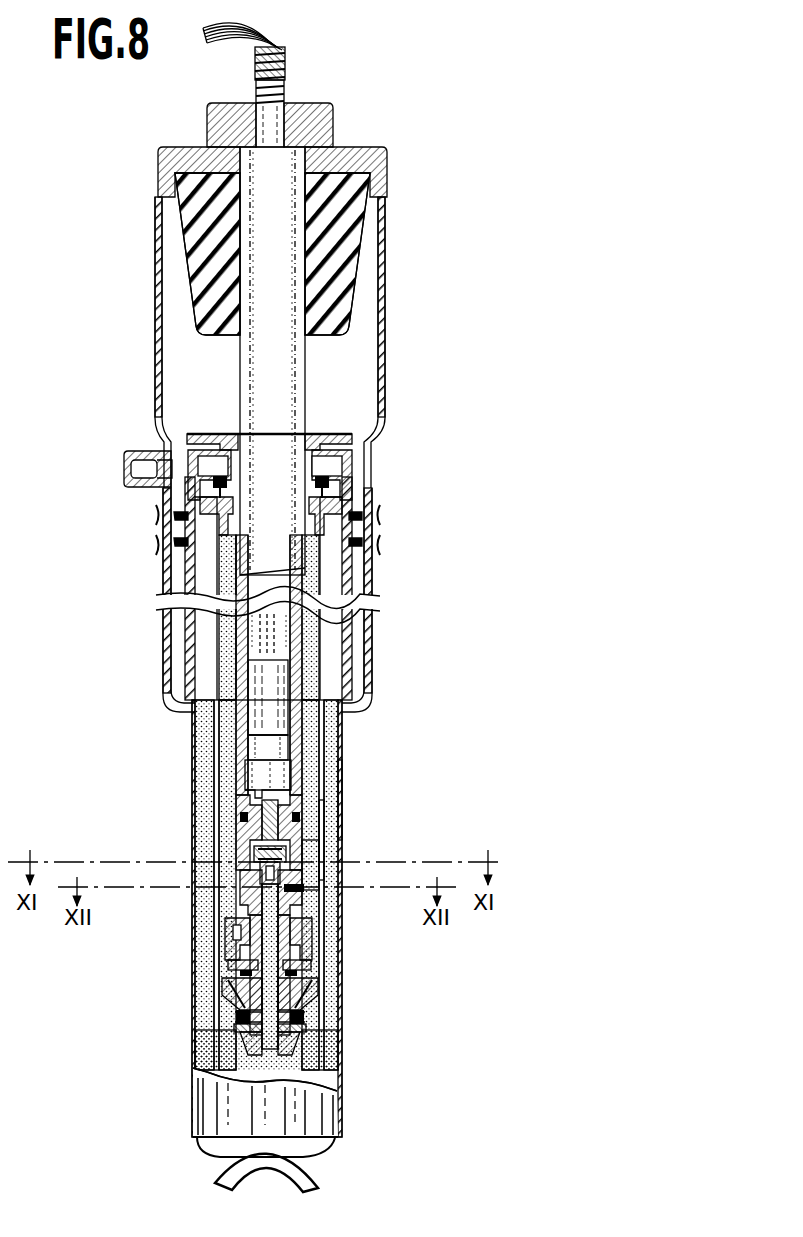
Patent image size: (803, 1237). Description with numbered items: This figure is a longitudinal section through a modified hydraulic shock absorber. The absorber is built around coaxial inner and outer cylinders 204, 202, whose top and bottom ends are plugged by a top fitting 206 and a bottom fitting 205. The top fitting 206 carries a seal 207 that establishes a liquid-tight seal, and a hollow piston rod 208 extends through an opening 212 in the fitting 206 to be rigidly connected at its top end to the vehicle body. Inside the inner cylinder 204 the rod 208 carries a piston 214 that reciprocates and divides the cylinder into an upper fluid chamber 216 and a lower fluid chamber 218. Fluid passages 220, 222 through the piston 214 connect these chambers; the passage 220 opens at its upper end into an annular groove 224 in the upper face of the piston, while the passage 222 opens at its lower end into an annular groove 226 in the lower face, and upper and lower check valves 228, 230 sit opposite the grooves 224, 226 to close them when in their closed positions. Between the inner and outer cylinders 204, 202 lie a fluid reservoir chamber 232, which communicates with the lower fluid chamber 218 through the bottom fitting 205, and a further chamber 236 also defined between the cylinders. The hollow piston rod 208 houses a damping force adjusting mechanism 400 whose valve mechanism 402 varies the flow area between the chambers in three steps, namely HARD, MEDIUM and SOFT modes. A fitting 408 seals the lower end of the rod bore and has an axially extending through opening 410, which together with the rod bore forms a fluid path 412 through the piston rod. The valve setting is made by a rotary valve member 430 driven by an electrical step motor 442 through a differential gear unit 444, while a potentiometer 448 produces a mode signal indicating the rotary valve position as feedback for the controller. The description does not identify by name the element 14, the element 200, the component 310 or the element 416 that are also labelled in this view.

The probe assembly 14 is at (160, 595).
The housing 200 is at (347, 750).
The outer cylinder 202 is at (343, 800).
The inner cylinder 204 is at (321, 835).
The bottom fitting 205 is at (208, 1150).
The fitting 206 is at (350, 432).
The seal 207 is at (342, 476).
The piston rod 208 is at (250, 398).
The opening 212 is at (300, 512).
The piston 214 is at (298, 965).
The upper fluid chamber 216 is at (305, 866).
The lower fluid chamber 218 is at (305, 1052).
The fluid passage 220 is at (302, 993).
The fluid passage 222 is at (240, 997).
The annular groove 224 is at (303, 950).
The annular groove 226 is at (300, 1017).
The upper check valve 228 is at (232, 968).
The lower check valve 230 is at (236, 1016).
The fluid reservoir chamber 232 is at (200, 1040).
The chamber 236 is at (165, 672).
The purge fitting 310 is at (145, 450).
The damping force adjusting mechanism 400 is at (237, 835).
The valve mechanism 402 is at (240, 864).
The fitting 408 is at (240, 946).
The through opening 410 is at (245, 1050).
The fluid path 412 is at (280, 898).
The pin 416 is at (255, 882).
The rotary valve member 430 is at (236, 890).
The electrical step motor 442 is at (255, 717).
The differential gear unit 444 is at (258, 752).
The potentiometer 448 is at (250, 776).